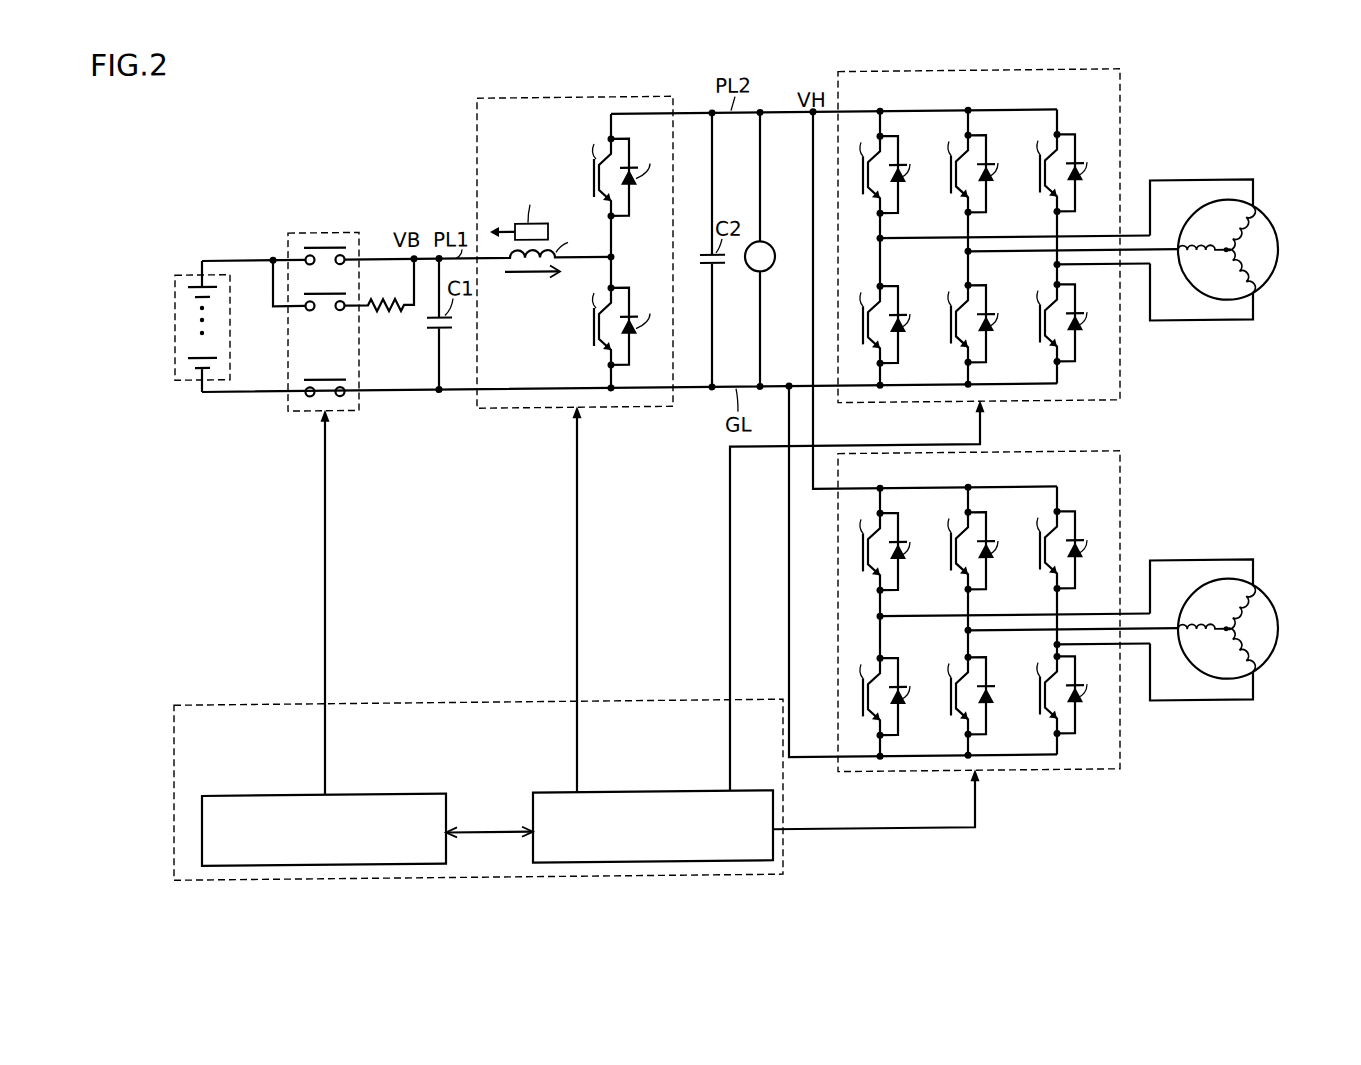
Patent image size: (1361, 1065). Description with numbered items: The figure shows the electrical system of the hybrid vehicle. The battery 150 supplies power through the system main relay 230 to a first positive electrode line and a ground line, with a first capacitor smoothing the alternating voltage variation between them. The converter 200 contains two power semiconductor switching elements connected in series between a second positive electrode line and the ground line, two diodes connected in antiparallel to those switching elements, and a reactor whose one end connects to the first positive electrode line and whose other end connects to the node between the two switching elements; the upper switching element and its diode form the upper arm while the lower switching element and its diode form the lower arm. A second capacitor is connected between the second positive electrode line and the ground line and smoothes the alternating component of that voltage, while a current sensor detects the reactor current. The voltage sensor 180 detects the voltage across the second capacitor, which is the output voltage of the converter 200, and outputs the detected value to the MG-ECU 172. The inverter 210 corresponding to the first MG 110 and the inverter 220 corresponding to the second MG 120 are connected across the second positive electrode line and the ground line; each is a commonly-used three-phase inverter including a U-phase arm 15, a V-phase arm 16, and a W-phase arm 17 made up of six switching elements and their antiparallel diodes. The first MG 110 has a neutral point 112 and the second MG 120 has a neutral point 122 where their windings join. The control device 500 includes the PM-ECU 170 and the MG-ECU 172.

The battery 150 is at (186, 268).
The SMR 230 is at (327, 229).
The converter 200 is at (628, 97).
The voltage sensor 180 is at (775, 254).
The inverter 210 is at (1071, 73).
The inverter 220 is at (1060, 455).
The U-phase arm 15 is at (867, 103).
The V-phase arm 16 is at (955, 103).
The W-phase arm 17 is at (1044, 103).
The first MG 110 is at (1263, 292).
The neutral point 112 is at (1226, 252).
The second MG 120 is at (1263, 671).
The neutral point 122 is at (1226, 631).
The control device 500 is at (218, 700).
The PM-ECU 170 is at (385, 791).
The MG-ECU 172 is at (652, 791).